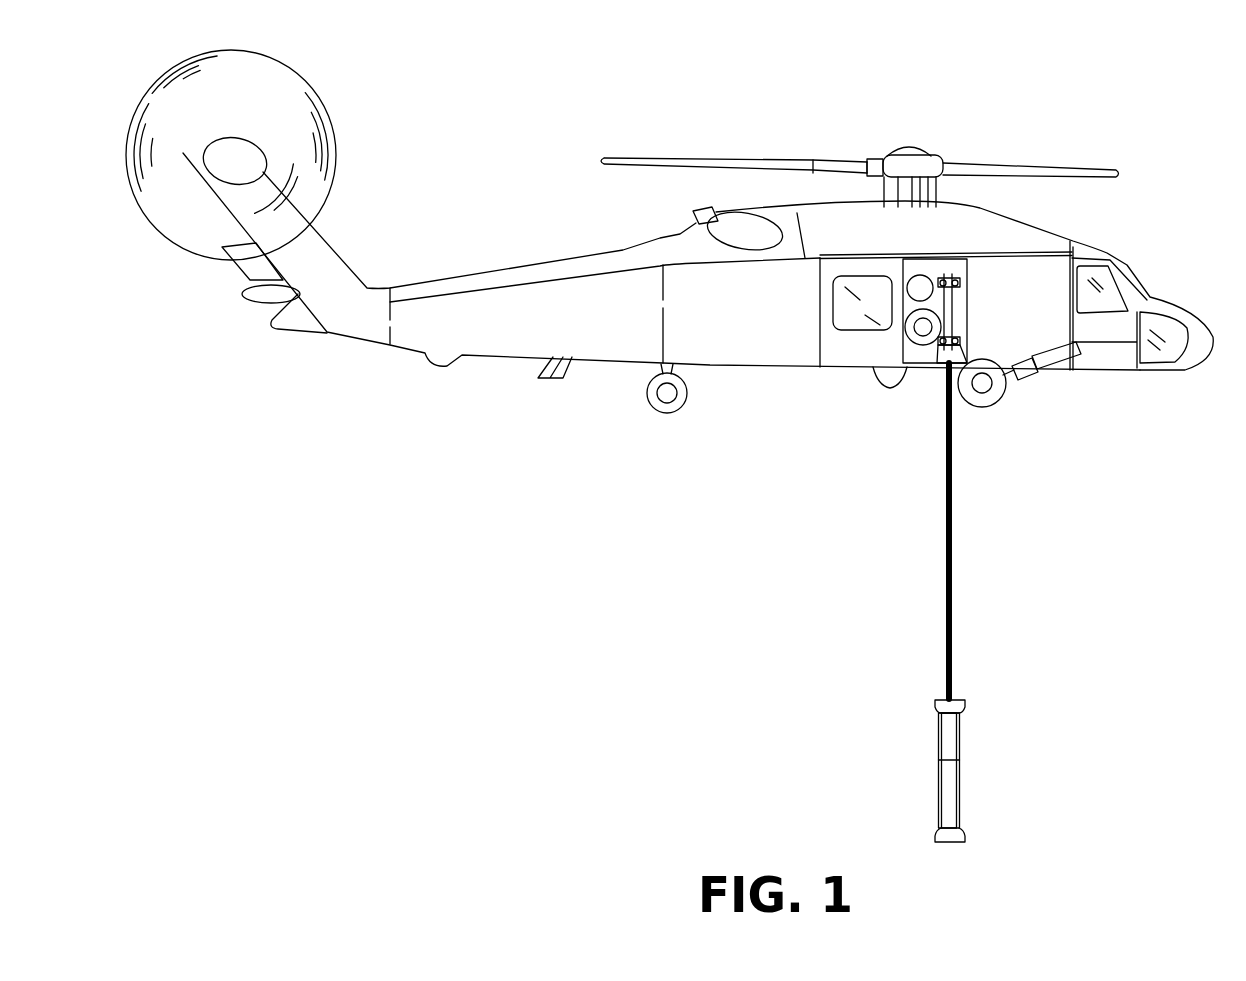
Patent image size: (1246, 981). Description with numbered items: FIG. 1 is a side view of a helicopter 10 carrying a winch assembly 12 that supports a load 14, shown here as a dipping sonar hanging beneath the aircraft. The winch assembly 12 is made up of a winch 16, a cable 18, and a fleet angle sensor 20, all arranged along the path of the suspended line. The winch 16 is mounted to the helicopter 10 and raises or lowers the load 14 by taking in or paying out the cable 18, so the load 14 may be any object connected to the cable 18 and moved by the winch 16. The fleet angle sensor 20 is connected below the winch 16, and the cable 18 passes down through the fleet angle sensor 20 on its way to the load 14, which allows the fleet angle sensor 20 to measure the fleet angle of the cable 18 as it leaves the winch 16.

The helicopter 10 is at (536, 133).
The winch assembly 12 is at (962, 262).
The load 14 is at (995, 745).
The winch 16 is at (905, 328).
The cable 18 is at (953, 620).
The fleet angle sensor 20 is at (935, 383).